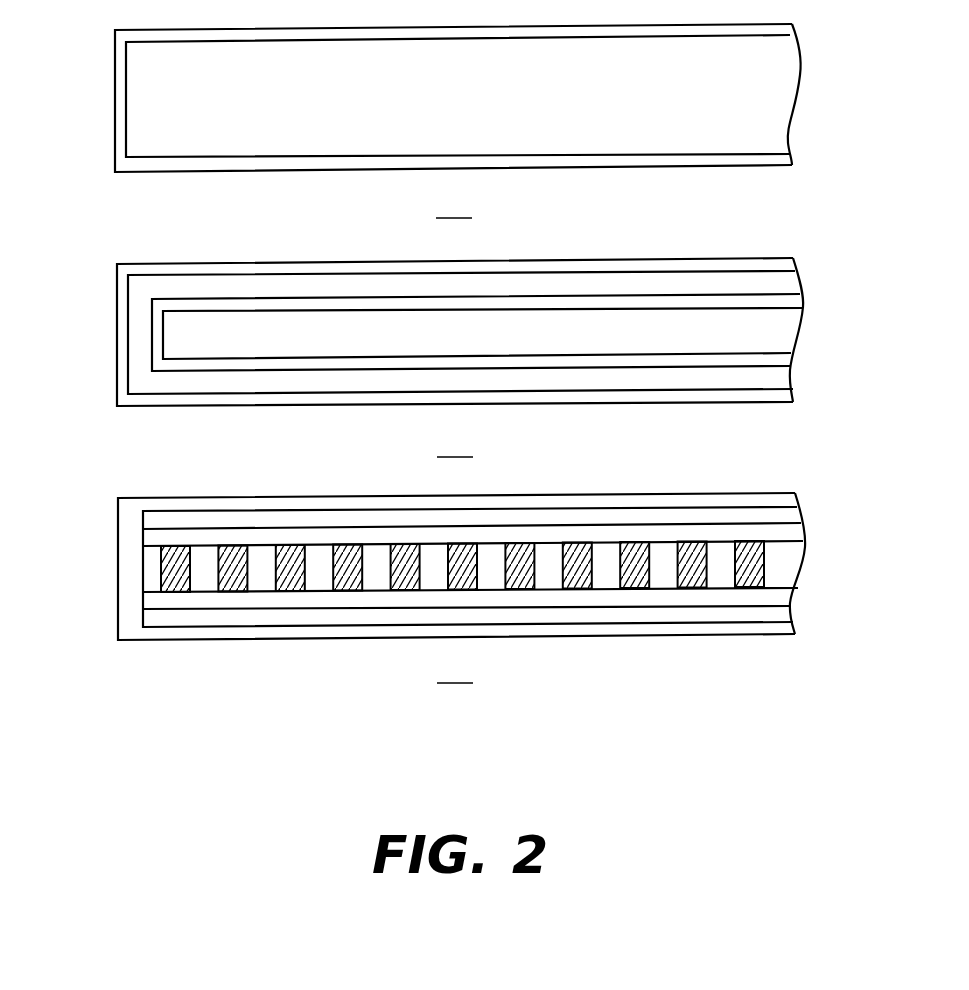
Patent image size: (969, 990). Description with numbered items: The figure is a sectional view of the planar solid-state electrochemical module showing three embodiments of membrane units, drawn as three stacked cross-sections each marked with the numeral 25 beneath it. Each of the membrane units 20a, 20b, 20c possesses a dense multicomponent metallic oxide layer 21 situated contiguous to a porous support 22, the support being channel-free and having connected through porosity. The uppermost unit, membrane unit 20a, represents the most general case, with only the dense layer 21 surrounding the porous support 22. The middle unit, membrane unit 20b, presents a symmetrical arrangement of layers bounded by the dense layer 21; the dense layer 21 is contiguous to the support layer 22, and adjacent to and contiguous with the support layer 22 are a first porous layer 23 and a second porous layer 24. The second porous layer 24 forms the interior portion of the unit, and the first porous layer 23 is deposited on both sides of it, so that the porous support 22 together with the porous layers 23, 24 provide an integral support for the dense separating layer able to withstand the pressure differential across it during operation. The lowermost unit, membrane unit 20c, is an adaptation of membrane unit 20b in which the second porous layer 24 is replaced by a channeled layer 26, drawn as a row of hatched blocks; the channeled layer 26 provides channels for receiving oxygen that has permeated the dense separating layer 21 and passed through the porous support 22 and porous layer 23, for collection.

The membrane unit 20a is at (122, 86).
The membrane unit 20b is at (123, 320).
The membrane unit 20c is at (125, 585).
The dense multicomponent metallic oxide layer 21 is at (777, 30).
The porous support 22 is at (765, 93).
The first porous layer 23 is at (780, 297).
The second porous layer 24 is at (780, 325).
The laminate structure 25 is at (454, 438).
The channeled layer 26 is at (752, 567).